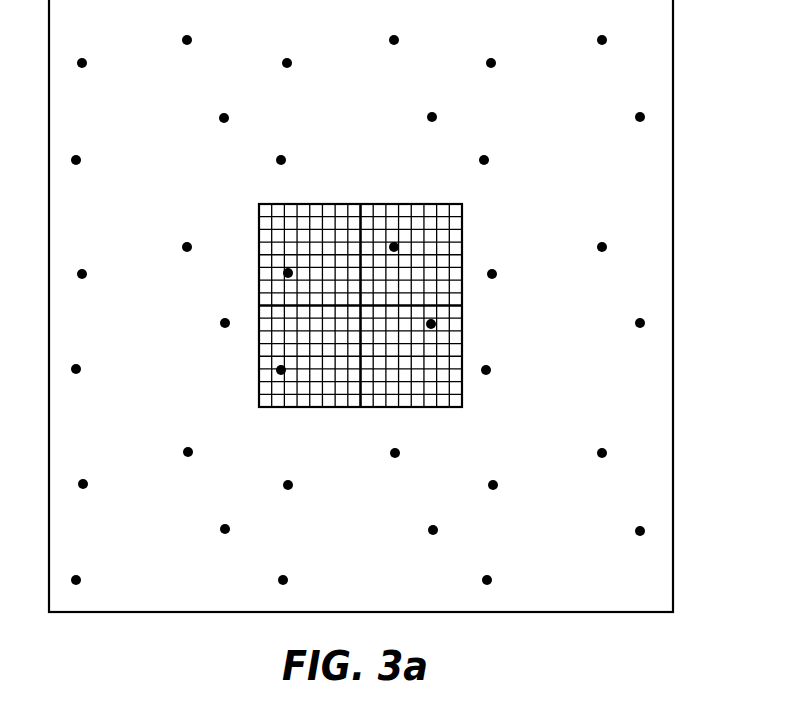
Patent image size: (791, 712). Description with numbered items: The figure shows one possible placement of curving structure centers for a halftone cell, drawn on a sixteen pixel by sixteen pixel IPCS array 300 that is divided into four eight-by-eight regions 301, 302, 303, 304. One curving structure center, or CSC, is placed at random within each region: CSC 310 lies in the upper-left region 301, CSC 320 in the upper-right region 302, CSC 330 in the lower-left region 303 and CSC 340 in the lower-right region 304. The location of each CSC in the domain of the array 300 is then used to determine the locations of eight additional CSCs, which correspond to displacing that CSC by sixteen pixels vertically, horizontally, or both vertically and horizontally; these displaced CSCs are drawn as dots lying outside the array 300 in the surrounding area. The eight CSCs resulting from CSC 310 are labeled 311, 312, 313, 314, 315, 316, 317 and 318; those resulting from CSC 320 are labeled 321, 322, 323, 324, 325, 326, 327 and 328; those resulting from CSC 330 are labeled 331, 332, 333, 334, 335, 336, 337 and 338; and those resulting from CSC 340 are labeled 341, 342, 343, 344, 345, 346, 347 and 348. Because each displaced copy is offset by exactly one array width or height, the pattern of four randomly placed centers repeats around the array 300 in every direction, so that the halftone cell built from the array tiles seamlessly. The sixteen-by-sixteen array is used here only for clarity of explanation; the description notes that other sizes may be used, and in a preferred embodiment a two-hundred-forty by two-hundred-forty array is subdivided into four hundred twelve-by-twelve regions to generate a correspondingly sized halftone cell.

The IPCS array 300 is at (471, 395).
The region 301 is at (342, 203).
The region 302 is at (382, 203).
The region 303 is at (350, 407).
The region 304 is at (398, 407).
The curving structure center (CSC) 310 is at (288, 273).
The curving structure center (CSC) 320 is at (394, 247).
The curving structure center (CSC) 330 is at (281, 370).
The curving structure center (CSC) 340 is at (431, 324).
The displaced CSC 311 is at (82, 63).
The displaced CSC 312 is at (287, 63).
The displaced CSC 313 is at (491, 63).
The displaced CSC 314 is at (82, 274).
The displaced CSC 315 is at (492, 274).
The displaced CSC 316 is at (83, 484).
The displaced CSC 317 is at (288, 485).
The displaced CSC 318 is at (493, 485).
The displaced CSC 321 is at (187, 40).
The displaced CSC 322 is at (394, 40).
The displaced CSC 323 is at (602, 40).
The displaced CSC 324 is at (187, 247).
The displaced CSC 325 is at (602, 247).
The displaced CSC 326 is at (188, 452).
The displaced CSC 327 is at (395, 453).
The displaced CSC 328 is at (602, 453).
The displaced CSC 331 is at (76, 160).
The displaced CSC 332 is at (281, 160).
The displaced CSC 333 is at (484, 160).
The displaced CSC 334 is at (76, 369).
The displaced CSC 335 is at (486, 370).
The displaced CSC 336 is at (76, 580).
The displaced CSC 337 is at (283, 580).
The displaced CSC 338 is at (487, 580).
The displaced CSC 341 is at (224, 118).
The displaced CSC 342 is at (432, 117).
The displaced CSC 343 is at (640, 117).
The displaced CSC 344 is at (225, 323).
The displaced CSC 345 is at (640, 323).
The displaced CSC 346 is at (225, 529).
The displaced CSC 347 is at (433, 530).
The displaced CSC 348 is at (640, 531).